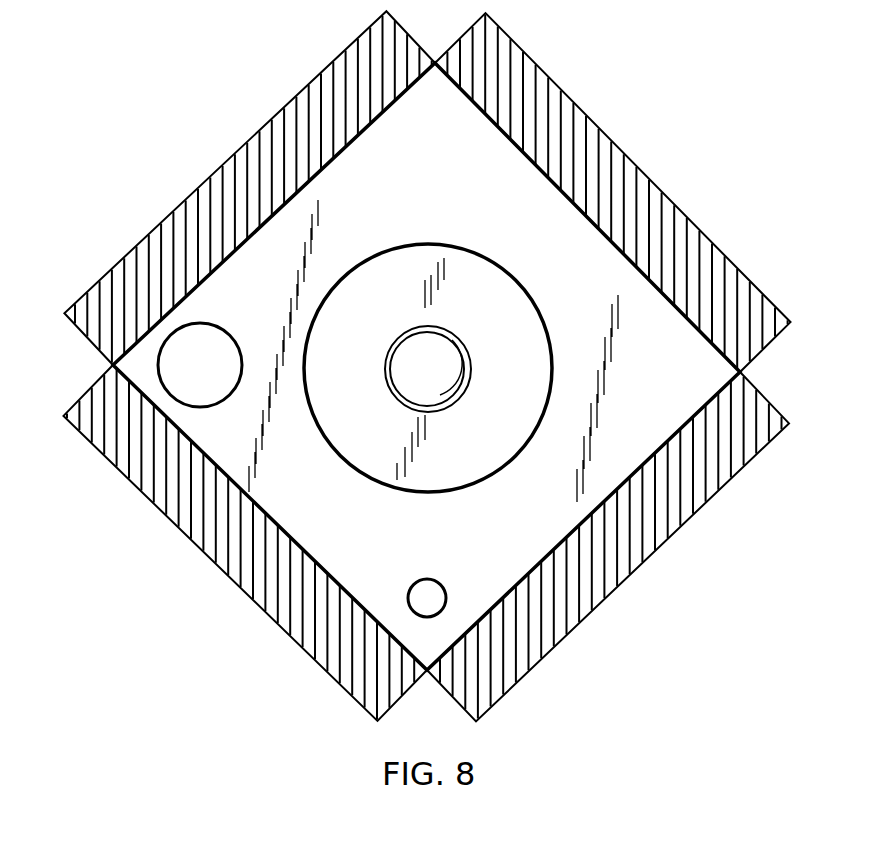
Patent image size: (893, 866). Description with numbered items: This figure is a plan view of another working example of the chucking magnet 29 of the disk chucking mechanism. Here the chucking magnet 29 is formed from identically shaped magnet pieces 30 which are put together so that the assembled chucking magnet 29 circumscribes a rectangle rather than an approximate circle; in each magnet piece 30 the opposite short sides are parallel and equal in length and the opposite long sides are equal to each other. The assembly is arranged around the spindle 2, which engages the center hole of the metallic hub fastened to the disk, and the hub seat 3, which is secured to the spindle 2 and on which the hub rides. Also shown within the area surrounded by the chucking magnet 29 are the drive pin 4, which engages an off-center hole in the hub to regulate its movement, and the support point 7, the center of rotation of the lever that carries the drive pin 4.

The spindle 2 is at (433, 372).
The hub seat 3 is at (440, 277).
The drive pin 4 is at (193, 351).
The support point 7 is at (423, 590).
The chucking magnet 29 is at (438, 366).
The magnet piece 30 is at (227, 193).